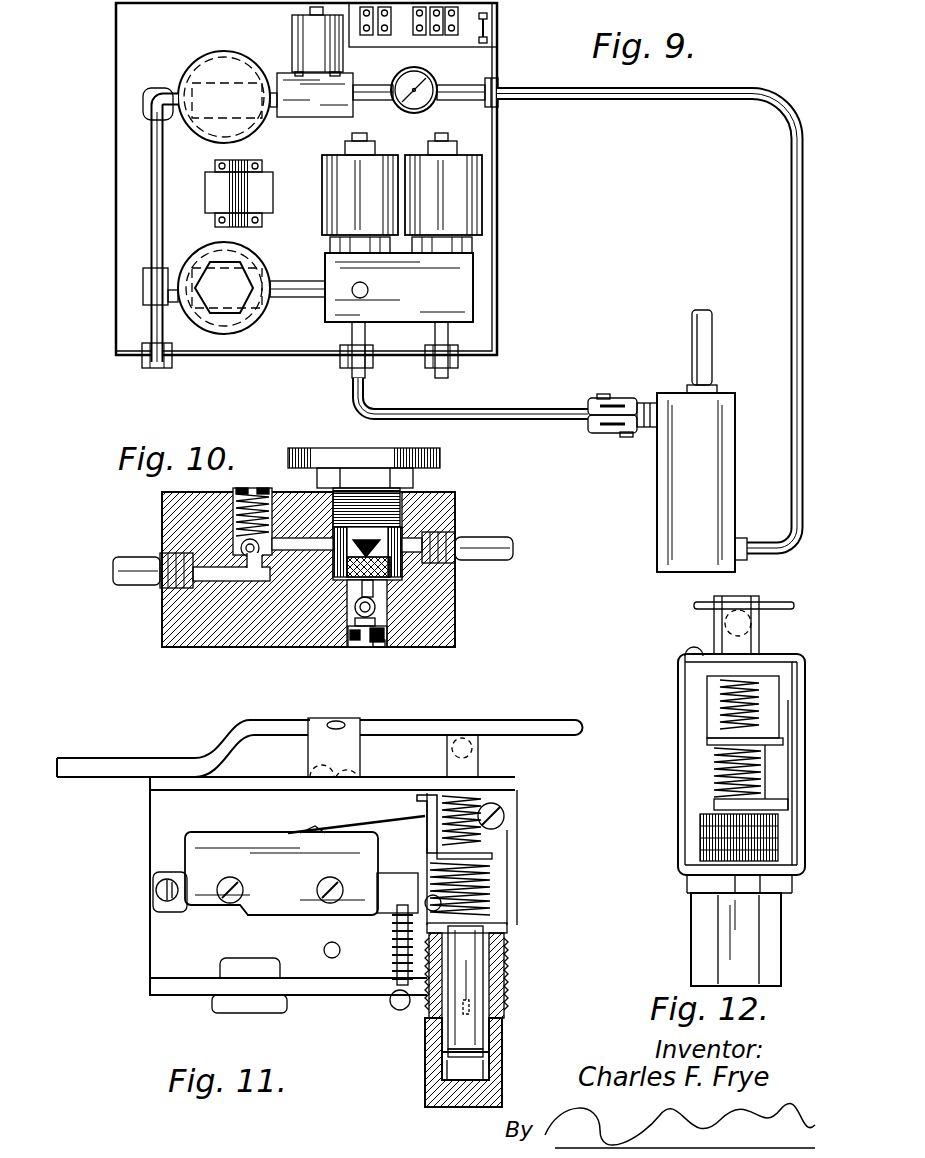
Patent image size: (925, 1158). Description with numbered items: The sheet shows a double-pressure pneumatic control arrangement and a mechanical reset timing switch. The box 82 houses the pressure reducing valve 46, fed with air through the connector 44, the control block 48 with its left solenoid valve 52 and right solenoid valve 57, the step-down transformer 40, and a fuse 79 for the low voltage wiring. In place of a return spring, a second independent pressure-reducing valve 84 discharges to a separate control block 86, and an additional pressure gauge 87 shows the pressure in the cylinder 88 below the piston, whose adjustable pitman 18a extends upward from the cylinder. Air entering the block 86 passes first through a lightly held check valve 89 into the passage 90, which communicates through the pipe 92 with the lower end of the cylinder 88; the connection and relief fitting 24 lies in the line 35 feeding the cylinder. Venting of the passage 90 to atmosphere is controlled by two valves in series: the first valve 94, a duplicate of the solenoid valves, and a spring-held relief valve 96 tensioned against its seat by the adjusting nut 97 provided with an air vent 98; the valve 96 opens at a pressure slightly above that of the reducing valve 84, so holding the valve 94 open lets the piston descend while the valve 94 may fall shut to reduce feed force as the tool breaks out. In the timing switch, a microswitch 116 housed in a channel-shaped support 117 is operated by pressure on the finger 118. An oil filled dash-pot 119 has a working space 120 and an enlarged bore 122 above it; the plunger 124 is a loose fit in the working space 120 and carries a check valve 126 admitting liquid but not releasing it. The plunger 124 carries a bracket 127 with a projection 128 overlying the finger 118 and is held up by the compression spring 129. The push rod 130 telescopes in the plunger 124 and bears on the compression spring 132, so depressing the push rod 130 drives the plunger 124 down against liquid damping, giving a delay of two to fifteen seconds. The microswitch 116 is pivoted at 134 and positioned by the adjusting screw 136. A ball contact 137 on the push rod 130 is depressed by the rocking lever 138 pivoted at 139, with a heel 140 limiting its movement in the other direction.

In FIG. 9, the adjustable pitman 18a is at (712, 328).
In FIG. 9, the connection and relief fitting 24 is at (624, 400).
In FIG. 9, the conduit 35 is at (548, 424).
In FIG. 9, the step-down transformer 40 is at (206, 183).
In FIG. 9, the connector 44 is at (150, 325).
In FIG. 9, the pressure reducing valve 46 is at (234, 322).
In FIG. 9, the control block 48 is at (473, 300).
In FIG. 9, the first solenoid valve 52 is at (330, 224).
In FIG. 9, the right solenoid valve 57 is at (482, 188).
In FIG. 9, the fuse 79 is at (497, 25).
In FIG. 9, the box 82 is at (497, 239).
In FIG. 9, the second independent pressure-reducing valve 84 is at (209, 72).
In FIG. 9, the control block 86 is at (288, 108).
In FIG. 10, the control block 86 is at (270, 640).
In FIG. 9, the additional pressure gauge 87 is at (438, 108).
In FIG. 9, the cylinder 88 is at (657, 515).
In FIG. 10, the check valve 89 is at (244, 546).
In FIG. 10, the passage 90 is at (312, 543).
In FIG. 9, the pipe 92 is at (660, 100).
In FIG. 10, the pipe 92 is at (495, 538).
In FIG. 9, the first valve 94 is at (297, 27).
In FIG. 10, the first valve 94 is at (327, 455).
In FIG. 10, the spring-held relief valve 96 is at (383, 608).
In FIG. 10, the adjusting nut 97 is at (353, 647).
In FIG. 10, the air vent 98 is at (366, 650).
In FIG. 11, the microswitch 116 is at (255, 843).
In FIG. 12, the channel-shaped support 117 is at (797, 780).
In FIG. 11, the finger 118 is at (357, 828).
In FIG. 11, the oil filled dash-pot 119 is at (500, 1036).
In FIG. 12, the oil filled dash-pot 119 is at (775, 936).
In FIG. 11, the working space 120 is at (442, 1088).
In FIG. 11, the enlarged bore 122 is at (502, 970).
In FIG. 11, the plunger 124 is at (472, 957).
In FIG. 11, the check valve 126 is at (444, 1043).
In FIG. 11, the bracket 127 is at (492, 856).
In FIG. 12, the bracket 127 is at (703, 711).
In FIG. 11, the projection 128 is at (423, 795).
In FIG. 11, the compression spring 129 is at (492, 886).
In FIG. 12, the compression spring 129 is at (715, 749).
In FIG. 11, the push rod 130 is at (504, 797).
In FIG. 11, the compression spring 132 is at (480, 832).
In FIG. 12, the compression spring 132 is at (713, 688).
In FIG. 11, the pivot 134 is at (158, 888).
In FIG. 11, the adjusting screw 136 is at (390, 1003).
In FIG. 11, the ball contact 137 is at (467, 732).
In FIG. 11, the rocking lever 138 is at (437, 720).
In FIG. 12, the rocking lever 138 is at (740, 596).
In FIG. 11, the pivot 139 is at (341, 722).
In FIG. 12, the pivot 139 is at (794, 606).
In FIG. 11, the heel 140 is at (183, 760).